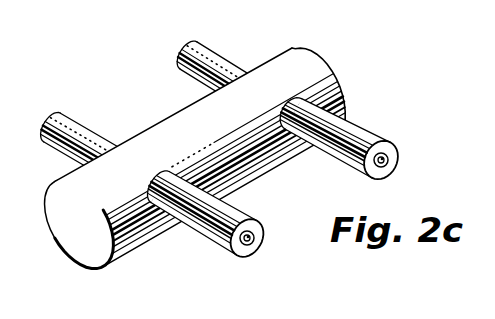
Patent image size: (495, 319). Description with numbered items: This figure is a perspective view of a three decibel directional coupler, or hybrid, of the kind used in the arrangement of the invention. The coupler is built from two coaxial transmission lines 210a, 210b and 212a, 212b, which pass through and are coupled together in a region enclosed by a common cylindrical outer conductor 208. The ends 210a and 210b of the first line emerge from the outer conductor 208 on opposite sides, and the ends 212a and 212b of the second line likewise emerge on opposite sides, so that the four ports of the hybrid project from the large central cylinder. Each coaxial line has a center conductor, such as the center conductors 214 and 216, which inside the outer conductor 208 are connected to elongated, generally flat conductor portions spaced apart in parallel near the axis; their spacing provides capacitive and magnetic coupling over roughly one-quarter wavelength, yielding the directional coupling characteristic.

The common outer conductor 208 is at (180, 113).
The coaxial transmission line 210a is at (397, 146).
The coaxial transmission line 210b is at (69, 130).
The coaxial transmission line 212a is at (221, 228).
The coaxial transmission line 212b is at (216, 48).
The center conductor 214 is at (222, 264).
The center conductor 216 is at (55, 128).